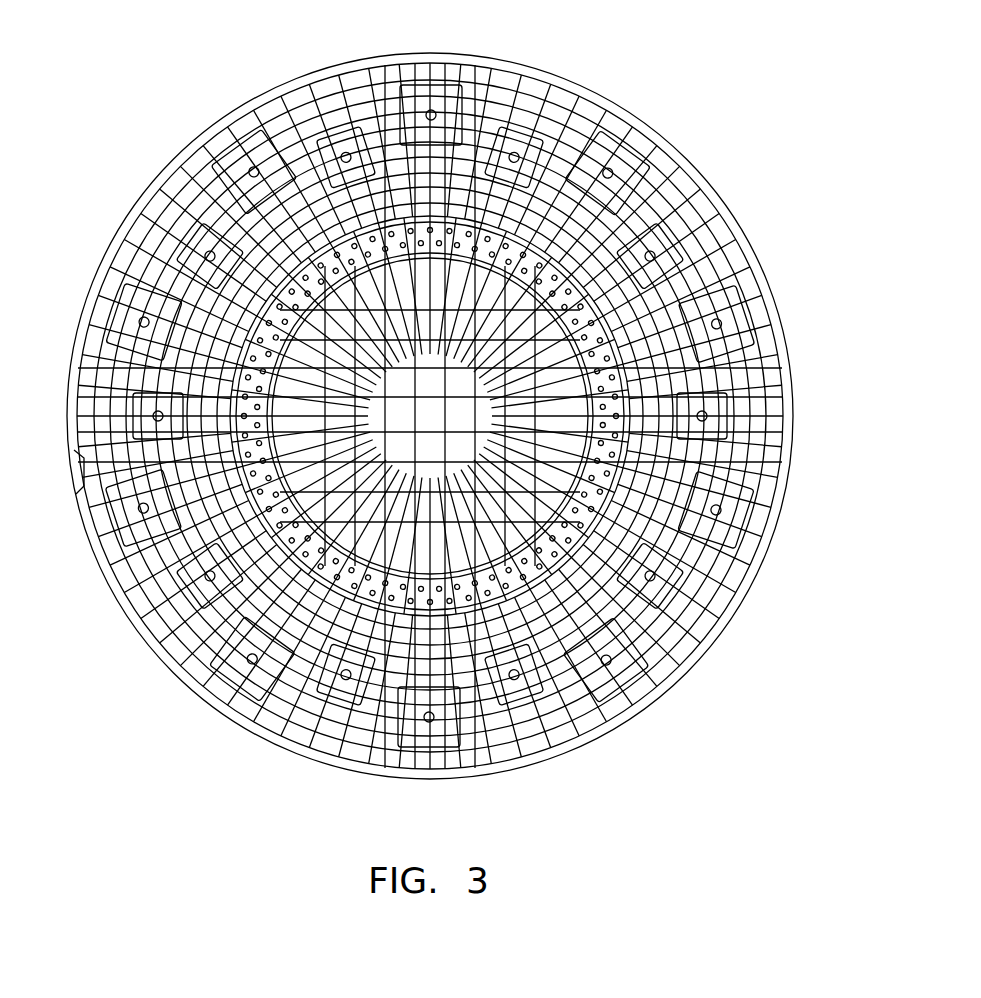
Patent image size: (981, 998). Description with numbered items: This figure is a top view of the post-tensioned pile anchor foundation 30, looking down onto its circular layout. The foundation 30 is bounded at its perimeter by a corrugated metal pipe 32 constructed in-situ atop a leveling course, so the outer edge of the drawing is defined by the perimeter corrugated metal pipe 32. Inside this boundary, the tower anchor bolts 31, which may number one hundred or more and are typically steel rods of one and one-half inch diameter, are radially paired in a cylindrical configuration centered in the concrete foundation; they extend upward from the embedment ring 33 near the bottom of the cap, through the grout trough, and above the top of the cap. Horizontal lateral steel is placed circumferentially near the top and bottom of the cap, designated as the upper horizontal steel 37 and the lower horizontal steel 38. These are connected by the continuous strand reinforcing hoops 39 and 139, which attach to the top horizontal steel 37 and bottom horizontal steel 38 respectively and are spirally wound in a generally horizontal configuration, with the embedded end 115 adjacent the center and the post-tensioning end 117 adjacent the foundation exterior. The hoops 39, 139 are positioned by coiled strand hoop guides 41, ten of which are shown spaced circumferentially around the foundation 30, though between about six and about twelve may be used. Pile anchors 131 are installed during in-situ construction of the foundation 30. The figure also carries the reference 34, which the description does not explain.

The pile anchor foundation 30 is at (680, 43).
The tower anchor bolts 31 is at (700, 258).
The perimeter corrugated metal pipe 32 is at (720, 193).
The embedment ring 33 is at (718, 274).
The heater zone 34 is at (752, 440).
The upper horizontal (lateral) steel 37 is at (748, 580).
The lower horizontal (lateral) steel 38 is at (430, 416).
The continuous strand reinforcing hoop 39 is at (666, 683).
The continuous strand reinforcing hoop 139 is at (430, 416).
The coiled strand hoop guides 41 is at (278, 88).
The embedded end 115 is at (127, 603).
The post-tensioning end 117 is at (75, 487).
The pile anchors 131 is at (220, 127).